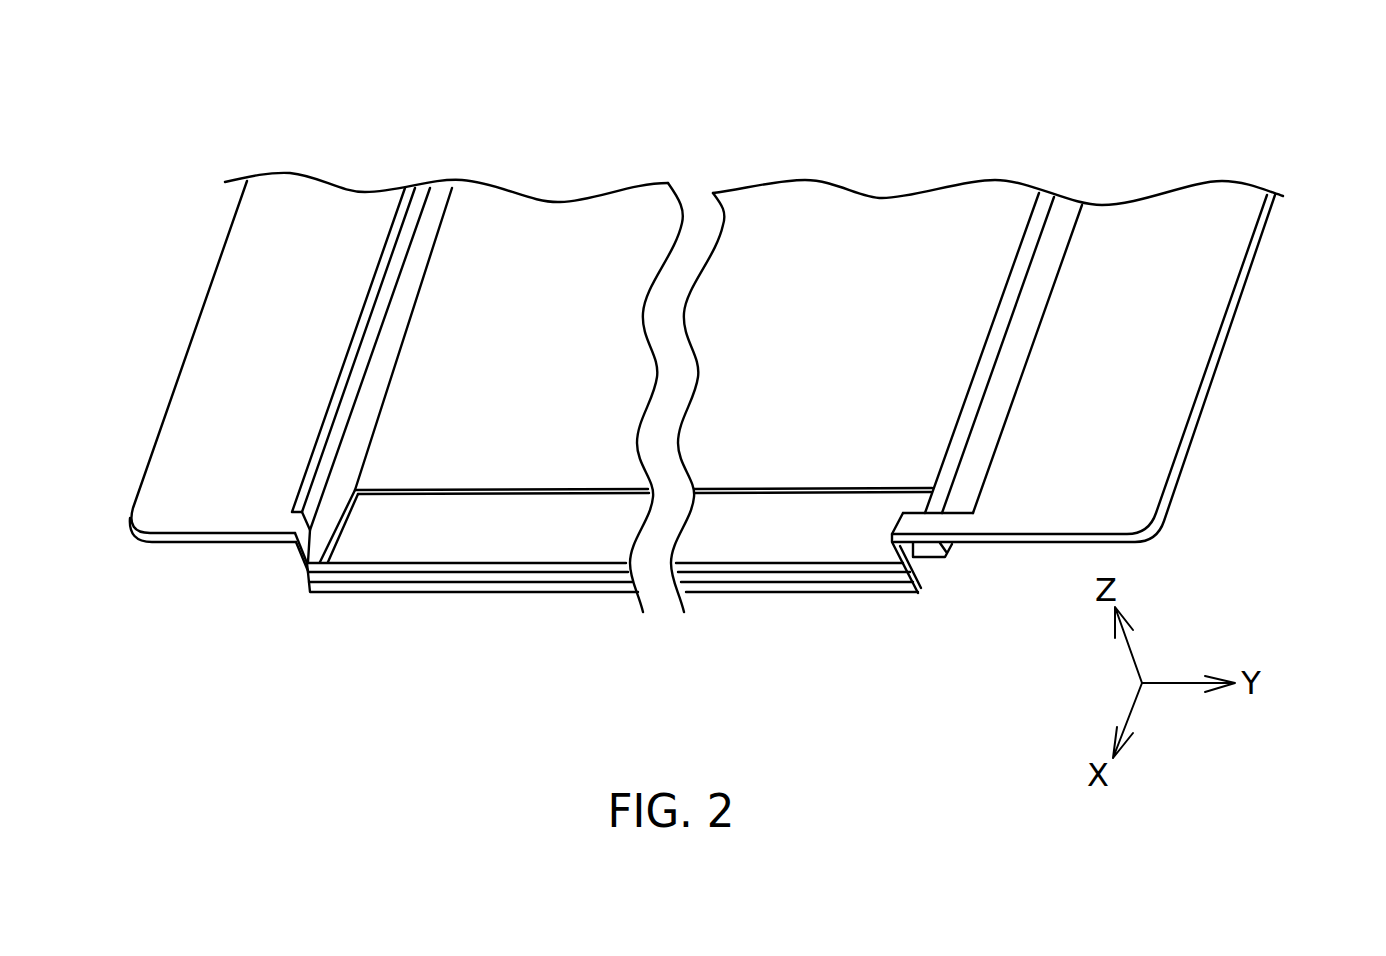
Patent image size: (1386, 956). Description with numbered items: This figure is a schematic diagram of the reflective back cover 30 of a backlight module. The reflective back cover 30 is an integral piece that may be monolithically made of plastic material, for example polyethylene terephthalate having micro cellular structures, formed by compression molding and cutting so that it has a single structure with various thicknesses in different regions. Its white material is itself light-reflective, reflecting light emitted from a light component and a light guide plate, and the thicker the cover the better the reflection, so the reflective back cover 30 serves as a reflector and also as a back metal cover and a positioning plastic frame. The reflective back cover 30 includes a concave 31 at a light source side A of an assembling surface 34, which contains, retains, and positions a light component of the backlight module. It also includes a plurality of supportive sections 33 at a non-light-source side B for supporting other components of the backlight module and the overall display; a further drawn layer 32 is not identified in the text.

The reflective back cover 30 is at (278, 92).
The concave 31 is at (810, 553).
The layer 32 is at (507, 567).
The supportive sections 33 is at (418, 195).
The assembling surface 34 is at (628, 213).
The light source side A is at (667, 638).
The non-light-source side B is at (137, 364).